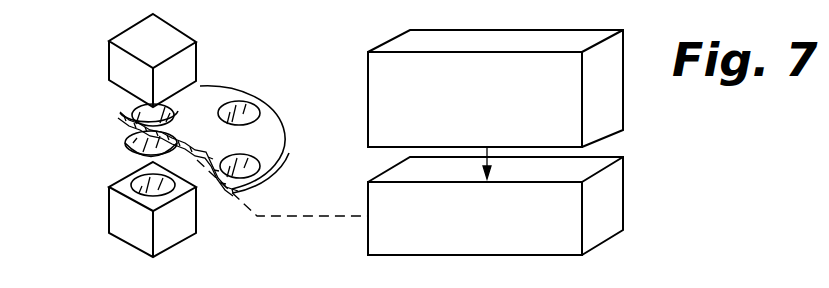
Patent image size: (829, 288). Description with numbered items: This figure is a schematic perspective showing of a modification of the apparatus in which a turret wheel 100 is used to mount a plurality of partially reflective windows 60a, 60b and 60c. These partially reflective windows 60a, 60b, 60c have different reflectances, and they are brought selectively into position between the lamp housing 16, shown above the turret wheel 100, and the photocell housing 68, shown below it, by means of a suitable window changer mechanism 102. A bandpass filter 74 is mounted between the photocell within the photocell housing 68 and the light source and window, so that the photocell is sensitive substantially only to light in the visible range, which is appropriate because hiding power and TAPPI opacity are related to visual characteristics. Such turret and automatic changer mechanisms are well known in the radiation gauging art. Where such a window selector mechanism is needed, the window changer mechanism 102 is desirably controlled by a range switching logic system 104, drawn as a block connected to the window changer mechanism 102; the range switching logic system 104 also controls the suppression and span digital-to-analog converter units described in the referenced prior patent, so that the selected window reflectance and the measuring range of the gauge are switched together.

The lamp housing 16 is at (127, 35).
The partially reflective window 60a is at (273, 168).
The partially reflective window 60b is at (250, 102).
The partially reflective window 60c is at (118, 104).
The photocell housing 68 is at (110, 213).
The bandpass filter 74 is at (123, 137).
The turret wheel 100 is at (217, 88).
The window changer mechanism 102 is at (598, 228).
The range switching logic system 104 is at (598, 120).